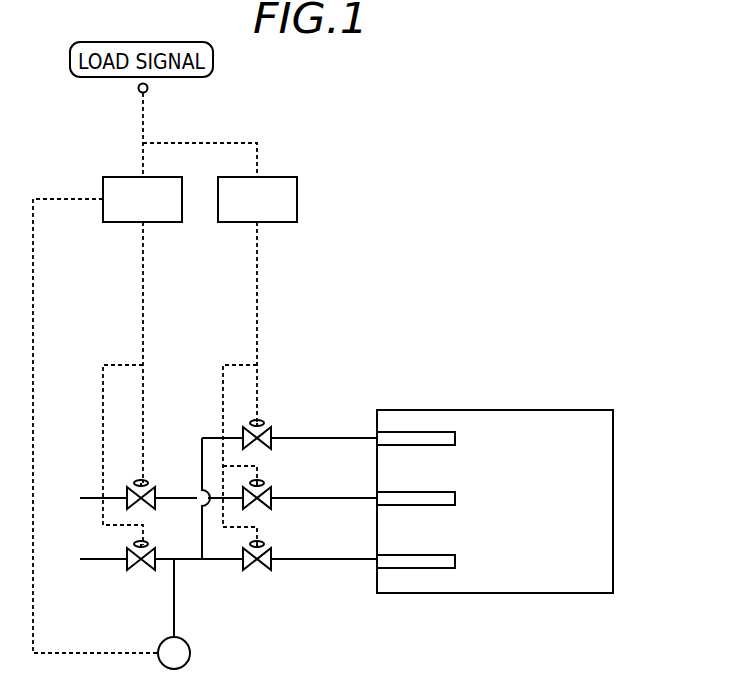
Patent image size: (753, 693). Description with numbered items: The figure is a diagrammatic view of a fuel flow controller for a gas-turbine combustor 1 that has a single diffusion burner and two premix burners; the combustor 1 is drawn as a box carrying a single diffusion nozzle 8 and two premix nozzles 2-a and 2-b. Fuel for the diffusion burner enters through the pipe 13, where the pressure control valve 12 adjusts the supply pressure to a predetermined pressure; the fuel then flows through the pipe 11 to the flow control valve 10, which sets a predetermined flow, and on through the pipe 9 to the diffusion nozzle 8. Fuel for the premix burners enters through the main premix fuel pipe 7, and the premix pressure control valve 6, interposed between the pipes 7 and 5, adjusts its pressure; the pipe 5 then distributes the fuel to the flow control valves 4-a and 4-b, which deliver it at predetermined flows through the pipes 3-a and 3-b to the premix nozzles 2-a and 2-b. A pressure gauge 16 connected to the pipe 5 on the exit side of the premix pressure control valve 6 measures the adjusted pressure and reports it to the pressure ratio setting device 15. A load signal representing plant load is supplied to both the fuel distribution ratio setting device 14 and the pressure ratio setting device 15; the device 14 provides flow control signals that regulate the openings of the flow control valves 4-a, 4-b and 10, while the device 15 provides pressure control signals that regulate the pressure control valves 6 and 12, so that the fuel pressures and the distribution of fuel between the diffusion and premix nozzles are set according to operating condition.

The gas-turbine combustor 1 is at (565, 593).
The premix nozzle 2-a is at (455, 438).
The premix nozzle 2-b is at (455, 561).
The pipe 3-a is at (345, 436).
The pipe 3-b is at (327, 565).
The flow control valve 4-a is at (259, 421).
The flow control valve 4-b is at (252, 572).
The pipe 5 is at (212, 562).
The premix pressure control valve 6 is at (137, 572).
The main premix fuel pipe 7 is at (86, 562).
The diffusion nozzle 8 is at (455, 499).
The pipe 9 is at (322, 496).
The flow control valve 10 is at (262, 482).
The pipe 11 is at (180, 500).
The pressure control valve 12 is at (147, 482).
The pipe 13 is at (85, 500).
The fuel distribution ratio setting device 14 is at (297, 180).
The pressure ratio setting device 15 is at (103, 222).
The pressure gauge 16 is at (190, 655).